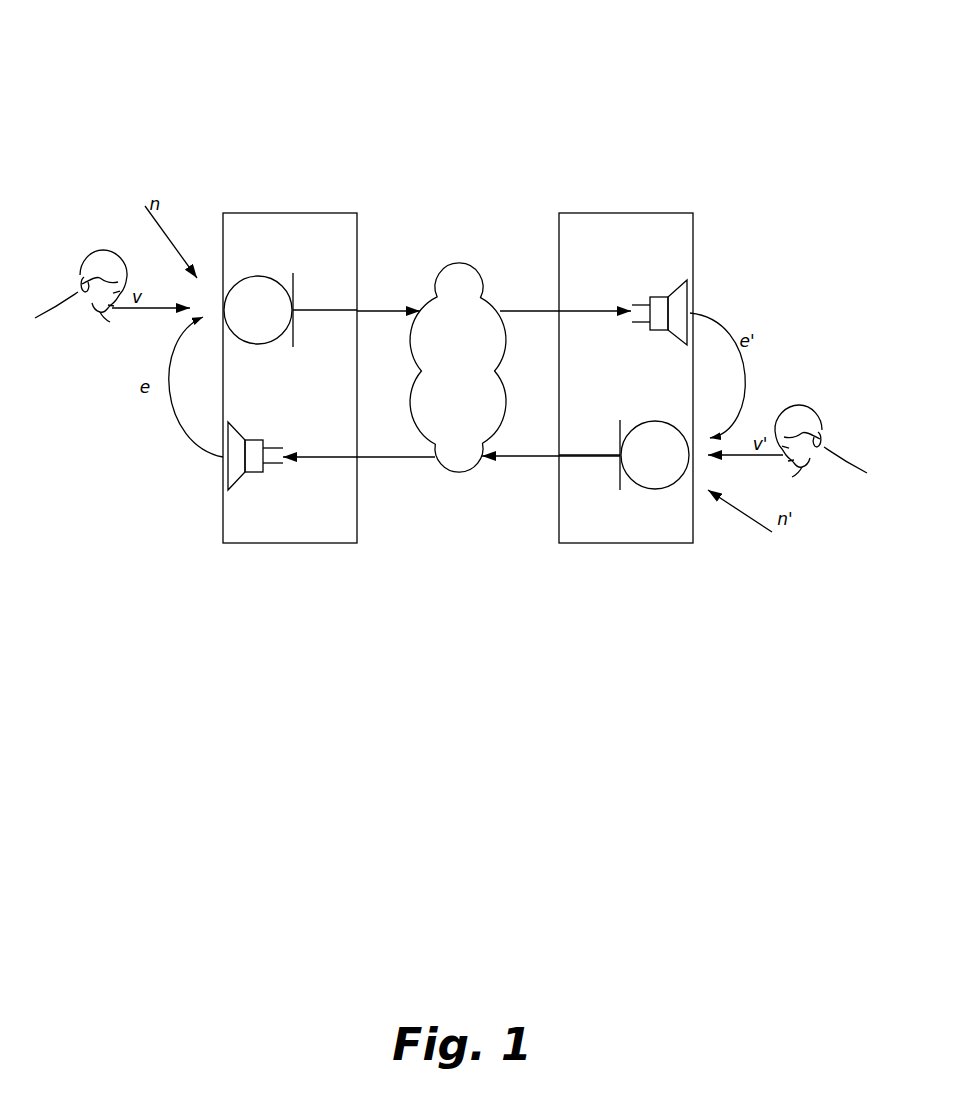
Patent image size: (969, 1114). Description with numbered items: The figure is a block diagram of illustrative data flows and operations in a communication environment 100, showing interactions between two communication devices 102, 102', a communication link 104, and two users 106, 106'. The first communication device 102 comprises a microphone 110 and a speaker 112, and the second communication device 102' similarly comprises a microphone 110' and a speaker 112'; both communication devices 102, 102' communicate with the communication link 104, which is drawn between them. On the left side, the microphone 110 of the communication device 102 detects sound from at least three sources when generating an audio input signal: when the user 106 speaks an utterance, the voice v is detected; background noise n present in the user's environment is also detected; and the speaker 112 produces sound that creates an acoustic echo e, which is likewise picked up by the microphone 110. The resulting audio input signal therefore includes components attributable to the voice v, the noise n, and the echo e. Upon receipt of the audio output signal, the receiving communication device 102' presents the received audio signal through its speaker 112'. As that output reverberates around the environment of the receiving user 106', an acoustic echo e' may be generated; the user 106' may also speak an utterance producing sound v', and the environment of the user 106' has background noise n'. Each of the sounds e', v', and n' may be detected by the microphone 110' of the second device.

The communication environment 100 is at (559, 89).
The communication device 102 is at (297, 359).
The communication device 102' is at (626, 359).
The communication link 104 is at (458, 263).
The user 106 is at (81, 266).
The user 106' is at (821, 424).
The microphone 110 is at (290, 330).
The microphone 110' is at (624, 474).
The speaker 112 is at (262, 470).
The speaker 112' is at (654, 324).